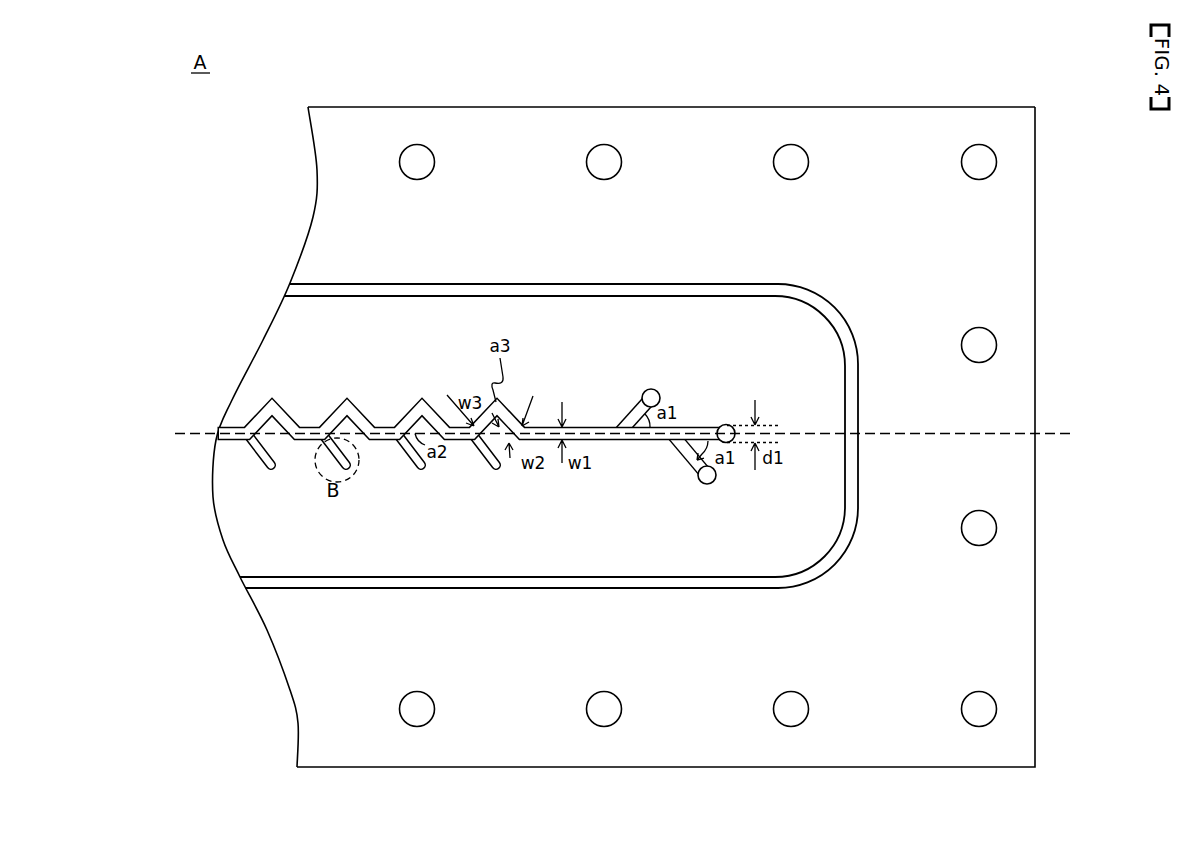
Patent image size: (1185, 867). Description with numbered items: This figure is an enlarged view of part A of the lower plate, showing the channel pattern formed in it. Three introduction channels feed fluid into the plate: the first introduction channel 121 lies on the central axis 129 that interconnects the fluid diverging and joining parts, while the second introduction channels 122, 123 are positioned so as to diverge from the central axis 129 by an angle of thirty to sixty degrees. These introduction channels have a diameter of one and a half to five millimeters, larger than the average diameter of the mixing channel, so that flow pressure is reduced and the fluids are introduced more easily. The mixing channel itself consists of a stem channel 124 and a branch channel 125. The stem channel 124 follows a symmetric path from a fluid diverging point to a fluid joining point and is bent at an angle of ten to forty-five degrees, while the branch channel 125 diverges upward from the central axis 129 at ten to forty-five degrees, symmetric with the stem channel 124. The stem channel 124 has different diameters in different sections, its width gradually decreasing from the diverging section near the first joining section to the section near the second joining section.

The first introduction channel 121 is at (729, 424).
The second introduction channel 122 is at (705, 485).
The second introduction channel 123 is at (650, 388).
The stem channel 124 is at (388, 425).
The branch channel 125 is at (427, 438).
The central axis 129 is at (1058, 428).